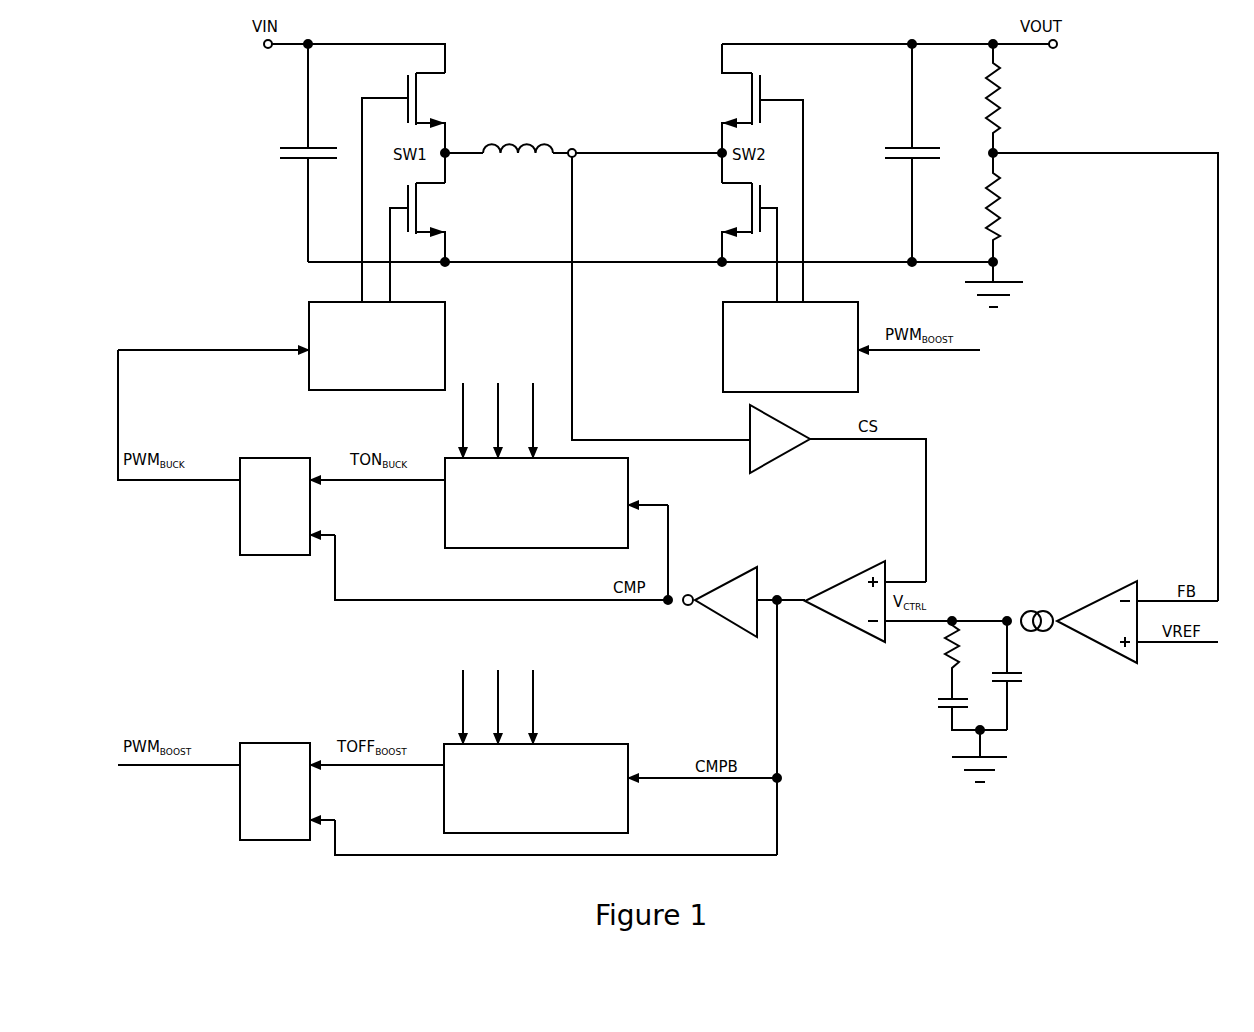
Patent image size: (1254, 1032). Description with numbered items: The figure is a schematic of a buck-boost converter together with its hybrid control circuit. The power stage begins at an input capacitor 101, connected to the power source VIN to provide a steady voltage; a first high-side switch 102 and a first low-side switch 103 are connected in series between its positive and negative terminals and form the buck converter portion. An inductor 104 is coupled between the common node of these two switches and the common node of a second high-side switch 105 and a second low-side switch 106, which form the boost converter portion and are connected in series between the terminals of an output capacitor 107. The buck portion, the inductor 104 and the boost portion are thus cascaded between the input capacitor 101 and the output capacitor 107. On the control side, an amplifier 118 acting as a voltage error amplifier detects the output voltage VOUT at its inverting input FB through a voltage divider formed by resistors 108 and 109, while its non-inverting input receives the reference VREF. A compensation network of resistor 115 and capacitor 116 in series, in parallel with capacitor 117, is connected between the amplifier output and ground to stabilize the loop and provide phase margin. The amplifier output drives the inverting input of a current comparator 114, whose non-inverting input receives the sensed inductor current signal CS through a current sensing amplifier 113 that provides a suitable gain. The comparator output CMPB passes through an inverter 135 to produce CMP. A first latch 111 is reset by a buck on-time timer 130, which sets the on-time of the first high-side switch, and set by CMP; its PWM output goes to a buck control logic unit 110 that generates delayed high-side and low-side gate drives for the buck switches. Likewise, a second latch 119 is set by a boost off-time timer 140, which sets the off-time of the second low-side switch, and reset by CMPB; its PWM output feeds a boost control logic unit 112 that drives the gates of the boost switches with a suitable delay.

The input capacitor 101 is at (297, 153).
The first high-side switch Q1 102 is at (412, 187).
The first low-side switch Q2 103 is at (418, 242).
The inductor 104 is at (506, 133).
The second high-side switch Q4 105 is at (746, 173).
The second low-side switch Q3 106 is at (743, 240).
The output capacitor 107 is at (901, 153).
The resistor 108 is at (1016, 98).
The resistor 109 is at (1016, 207).
The buck control logic unit 110 is at (281, 391).
The first latch 111 is at (454, 519).
The boost control logic unit 112 is at (851, 347).
The current sensing amplifier 113 is at (838, 493).
The current comparator 114 is at (906, 603).
The resistor 115 is at (933, 660).
The capacitor 116 is at (957, 707).
The capacitor 117 is at (1025, 675).
The amplifier 118 is at (1119, 622).
The second latch 119 is at (447, 789).
The buck on-time timer 130 is at (556, 484).
The inverter 135 is at (744, 605).
The boost off-time timer 140 is at (610, 741).